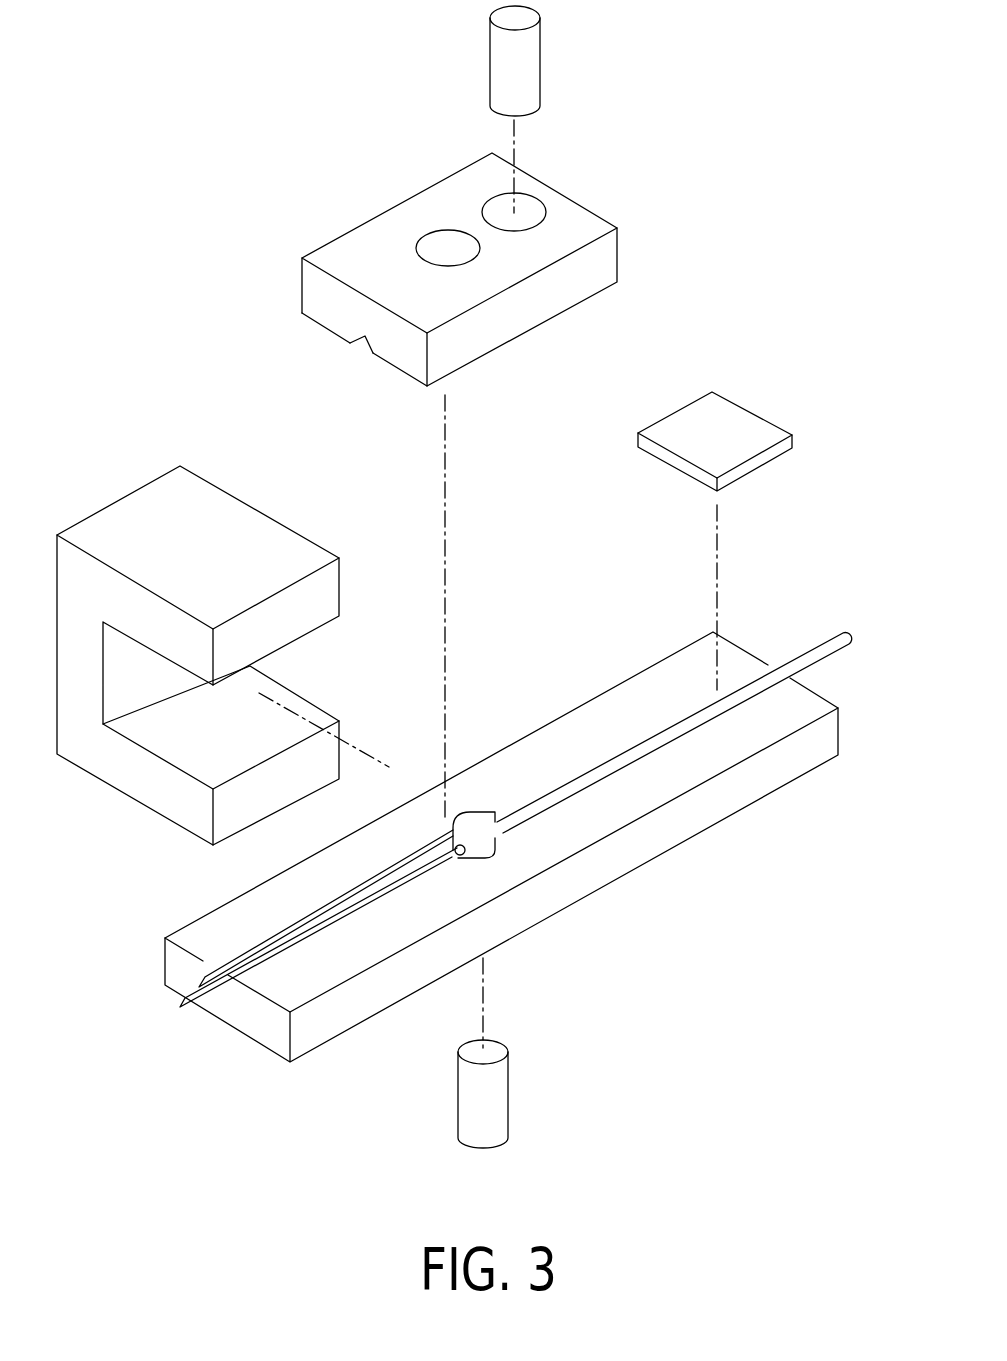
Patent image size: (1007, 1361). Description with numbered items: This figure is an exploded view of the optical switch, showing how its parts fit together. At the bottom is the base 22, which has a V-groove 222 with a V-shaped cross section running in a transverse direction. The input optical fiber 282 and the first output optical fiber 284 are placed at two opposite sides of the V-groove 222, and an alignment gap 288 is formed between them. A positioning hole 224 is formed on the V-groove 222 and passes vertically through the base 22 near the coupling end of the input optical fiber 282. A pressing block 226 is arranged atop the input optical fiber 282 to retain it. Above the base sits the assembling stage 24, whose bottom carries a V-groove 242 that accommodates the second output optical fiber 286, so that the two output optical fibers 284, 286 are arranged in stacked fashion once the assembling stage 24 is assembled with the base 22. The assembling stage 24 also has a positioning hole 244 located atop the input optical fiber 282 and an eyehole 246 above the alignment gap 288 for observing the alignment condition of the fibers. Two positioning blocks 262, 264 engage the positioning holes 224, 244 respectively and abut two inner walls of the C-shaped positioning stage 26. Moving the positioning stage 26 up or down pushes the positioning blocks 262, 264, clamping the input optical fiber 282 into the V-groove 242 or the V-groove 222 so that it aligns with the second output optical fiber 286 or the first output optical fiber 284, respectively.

The base 22 is at (692, 822).
The V-groove 222 is at (672, 712).
The positioning hole 224 is at (500, 838).
The pressing block 226 is at (735, 423).
The assembling stage 24 is at (378, 238).
The V-groove 242 is at (368, 350).
The positioning hole 244 is at (547, 230).
The eyehole 246 is at (447, 230).
The positioning stage 26 is at (170, 498).
The positioning block 262 is at (490, 1083).
The positioning block 264 is at (525, 78).
The input optical fiber 282 is at (825, 653).
The first output optical fiber 284 is at (182, 1004).
The second output optical fiber 286 is at (200, 980).
The alignment gap 288 is at (463, 853).